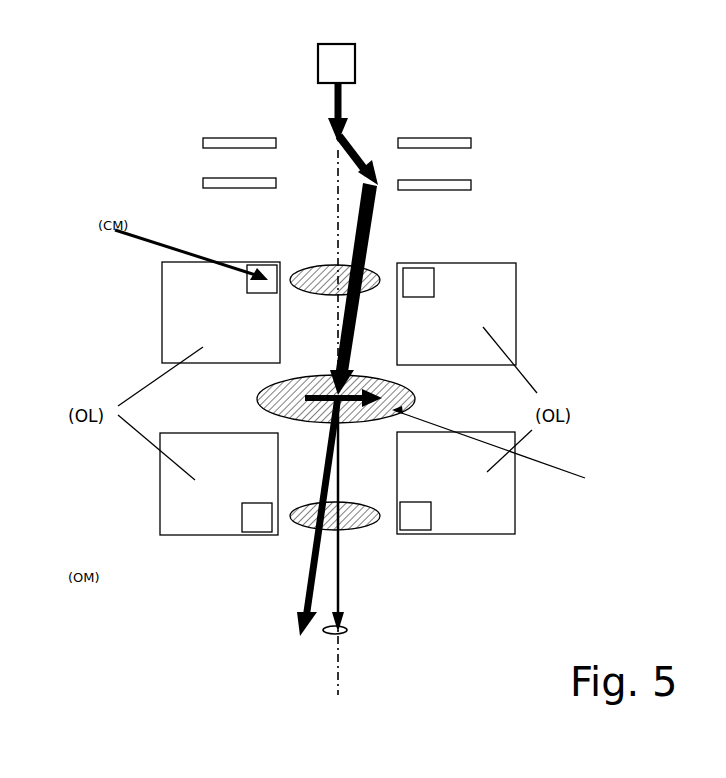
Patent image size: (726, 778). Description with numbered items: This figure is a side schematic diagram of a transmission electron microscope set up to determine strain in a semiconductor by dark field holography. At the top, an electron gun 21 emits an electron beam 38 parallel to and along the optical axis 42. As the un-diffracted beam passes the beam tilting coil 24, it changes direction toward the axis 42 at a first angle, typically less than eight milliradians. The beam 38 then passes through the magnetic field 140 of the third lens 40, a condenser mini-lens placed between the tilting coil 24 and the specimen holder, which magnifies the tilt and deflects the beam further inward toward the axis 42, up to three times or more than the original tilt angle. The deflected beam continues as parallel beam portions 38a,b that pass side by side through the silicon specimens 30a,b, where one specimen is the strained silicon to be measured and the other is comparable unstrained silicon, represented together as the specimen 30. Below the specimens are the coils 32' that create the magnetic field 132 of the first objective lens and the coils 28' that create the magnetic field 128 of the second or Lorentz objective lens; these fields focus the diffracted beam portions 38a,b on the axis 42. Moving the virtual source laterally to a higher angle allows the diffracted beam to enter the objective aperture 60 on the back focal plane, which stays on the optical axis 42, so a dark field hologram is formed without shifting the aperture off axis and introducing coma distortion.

The electron gun 21 is at (345, 62).
The electron beam 38 is at (332, 101).
The beam tilting coil 24 is at (200, 178).
The third lens 40 is at (196, 256).
The magnetic field of third lens 140 is at (380, 277).
The silicon specimens 30 is at (358, 410).
The strained and unstrained silicon specimens 30a,b is at (322, 388).
The magnetic field of objective lens OL 132 is at (516, 447).
The coils of first objective lens OL 32' is at (340, 407).
The coils of Lorentz objective lens OM 28' is at (258, 418).
The magnetic field of Lorentz objective lens OM 128 is at (305, 526).
The parallel beam portions 38a,b is at (340, 565).
The objective aperture 60 is at (358, 631).
The optical axis 42 is at (340, 680).